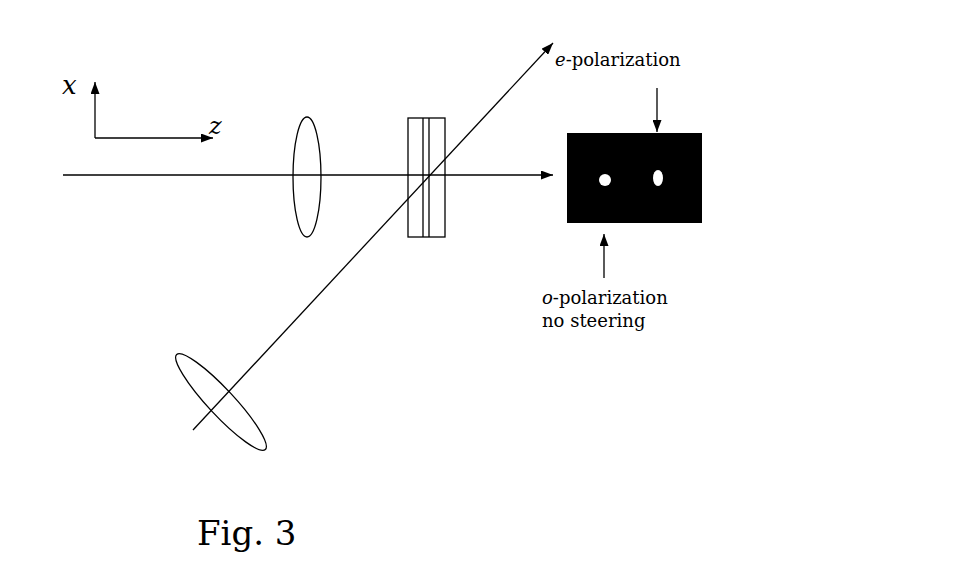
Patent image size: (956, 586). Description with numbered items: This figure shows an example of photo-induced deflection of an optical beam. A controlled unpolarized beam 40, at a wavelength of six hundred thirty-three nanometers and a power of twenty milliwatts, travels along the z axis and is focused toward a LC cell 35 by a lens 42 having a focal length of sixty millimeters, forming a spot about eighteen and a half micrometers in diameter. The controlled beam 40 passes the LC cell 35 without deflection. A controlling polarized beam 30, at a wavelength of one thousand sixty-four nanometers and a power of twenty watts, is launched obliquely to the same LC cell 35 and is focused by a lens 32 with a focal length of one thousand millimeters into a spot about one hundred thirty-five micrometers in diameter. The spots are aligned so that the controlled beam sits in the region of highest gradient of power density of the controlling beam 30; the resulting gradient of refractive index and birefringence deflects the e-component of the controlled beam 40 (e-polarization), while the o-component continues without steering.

The controlled unpolarized beam 40 is at (94, 184).
The lens 42 is at (297, 117).
The LC cell 35 is at (426, 116).
The controlling polarized beam 30 is at (333, 292).
The lens 32 is at (174, 355).